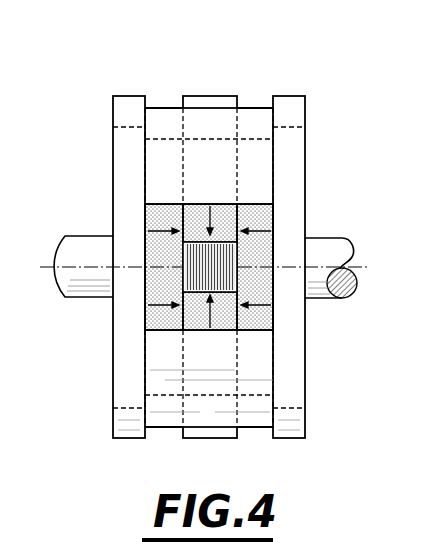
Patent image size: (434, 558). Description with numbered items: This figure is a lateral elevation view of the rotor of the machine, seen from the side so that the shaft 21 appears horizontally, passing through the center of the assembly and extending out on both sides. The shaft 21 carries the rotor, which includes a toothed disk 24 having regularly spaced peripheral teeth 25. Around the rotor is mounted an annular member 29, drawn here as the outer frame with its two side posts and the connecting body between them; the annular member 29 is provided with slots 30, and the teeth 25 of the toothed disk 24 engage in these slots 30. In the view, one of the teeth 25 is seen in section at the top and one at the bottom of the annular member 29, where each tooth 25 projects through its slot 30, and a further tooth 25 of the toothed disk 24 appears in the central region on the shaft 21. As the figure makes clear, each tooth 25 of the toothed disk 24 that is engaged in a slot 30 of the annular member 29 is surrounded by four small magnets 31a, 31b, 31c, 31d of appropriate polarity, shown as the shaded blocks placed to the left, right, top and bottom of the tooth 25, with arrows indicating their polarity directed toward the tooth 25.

The shaft 21 is at (330, 252).
The toothed disk 24 is at (240, 228).
The peripheral teeth 25 is at (217, 102).
The annular member 29 is at (127, 165).
The slots 30 is at (150, 262).
The small magnet 31a is at (162, 312).
The small magnet 31b is at (255, 315).
The small magnet 31c is at (223, 315).
The small magnet 31d is at (219, 214).